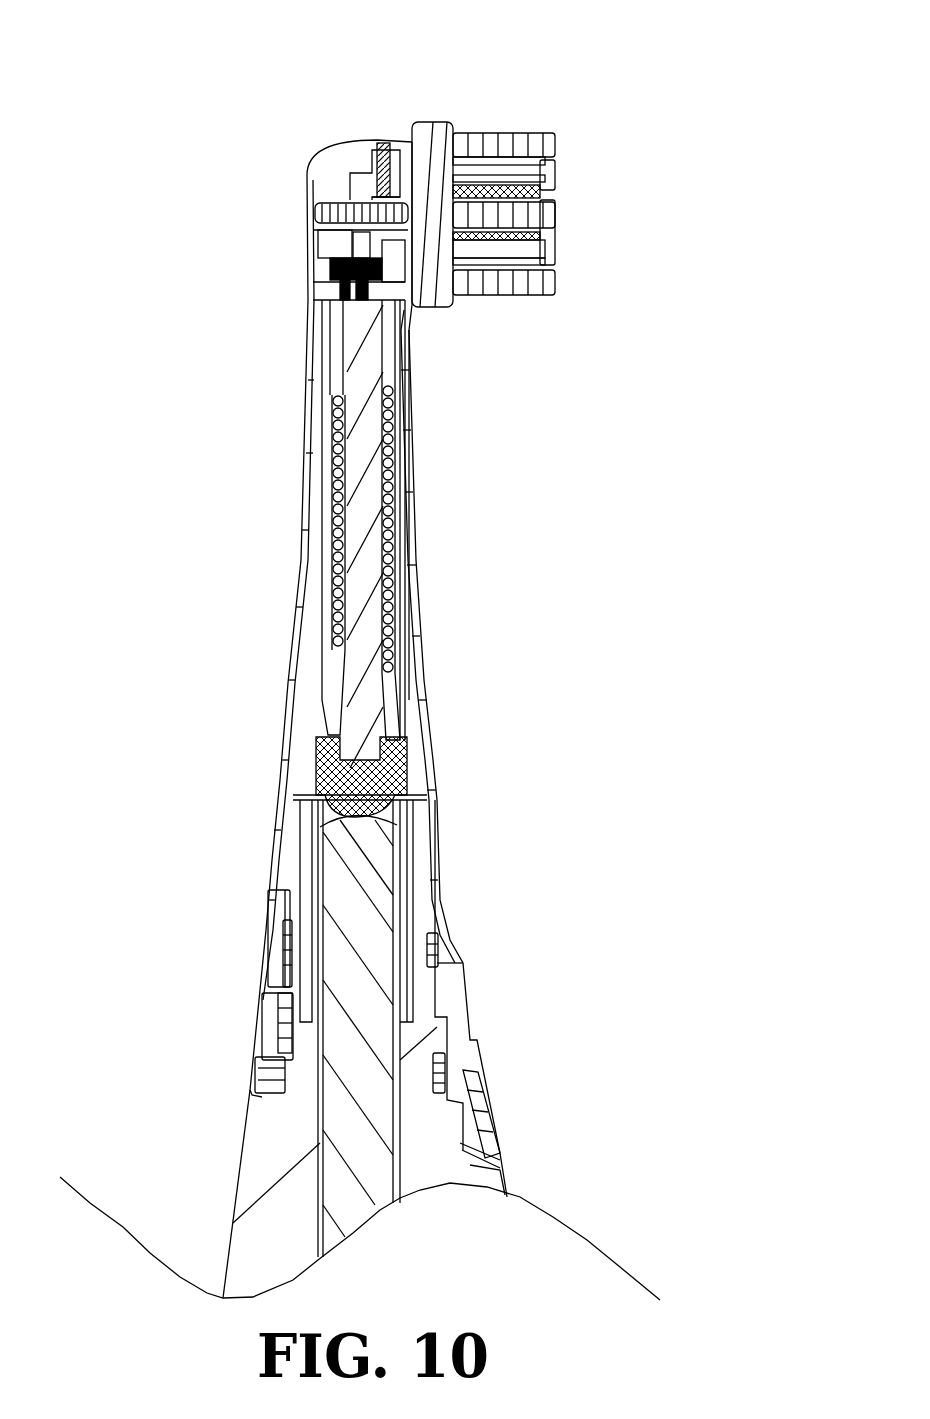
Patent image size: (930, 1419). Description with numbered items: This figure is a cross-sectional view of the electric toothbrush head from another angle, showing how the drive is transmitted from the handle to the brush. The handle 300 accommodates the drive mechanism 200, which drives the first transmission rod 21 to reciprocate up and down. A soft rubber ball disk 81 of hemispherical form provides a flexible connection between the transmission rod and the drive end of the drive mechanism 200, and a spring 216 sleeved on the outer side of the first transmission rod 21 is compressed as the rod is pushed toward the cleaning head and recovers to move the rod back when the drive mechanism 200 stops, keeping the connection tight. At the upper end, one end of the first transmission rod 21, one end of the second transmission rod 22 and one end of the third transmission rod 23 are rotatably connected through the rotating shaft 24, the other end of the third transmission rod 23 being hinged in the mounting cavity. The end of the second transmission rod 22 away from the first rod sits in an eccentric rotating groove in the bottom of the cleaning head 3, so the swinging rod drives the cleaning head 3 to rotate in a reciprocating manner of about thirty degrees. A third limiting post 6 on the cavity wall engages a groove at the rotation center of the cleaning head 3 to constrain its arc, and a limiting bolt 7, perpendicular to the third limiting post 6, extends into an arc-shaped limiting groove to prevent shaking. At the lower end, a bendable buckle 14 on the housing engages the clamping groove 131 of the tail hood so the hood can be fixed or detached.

The cleaning head 3 is at (453, 305).
The third limiting post 6 is at (330, 210).
The limiting bolt 7 is at (383, 143).
The buckle 14 is at (453, 1087).
The first transmission rod 21 is at (360, 495).
The second transmission rod 22 is at (365, 283).
The third transmission rod 23 is at (330, 243).
The rotating shaft 24 is at (335, 287).
The soft rubber ball disk 81 is at (370, 790).
The clamping groove 131 is at (467, 1108).
The drive mechanism 200 is at (353, 963).
The spring 216 is at (395, 628).
The handle 300 is at (288, 1208).